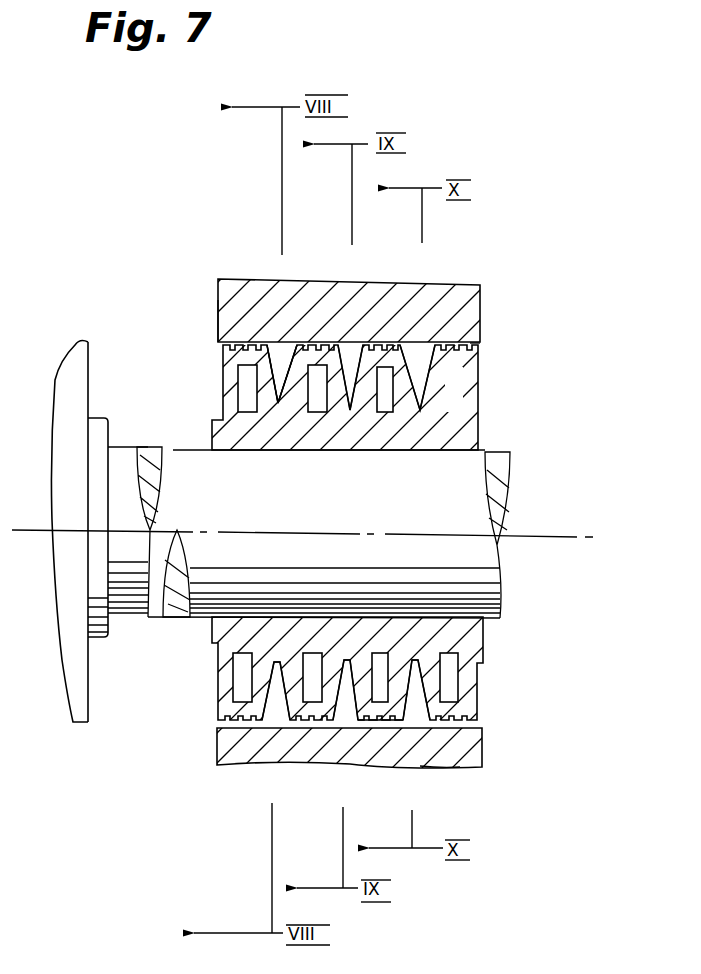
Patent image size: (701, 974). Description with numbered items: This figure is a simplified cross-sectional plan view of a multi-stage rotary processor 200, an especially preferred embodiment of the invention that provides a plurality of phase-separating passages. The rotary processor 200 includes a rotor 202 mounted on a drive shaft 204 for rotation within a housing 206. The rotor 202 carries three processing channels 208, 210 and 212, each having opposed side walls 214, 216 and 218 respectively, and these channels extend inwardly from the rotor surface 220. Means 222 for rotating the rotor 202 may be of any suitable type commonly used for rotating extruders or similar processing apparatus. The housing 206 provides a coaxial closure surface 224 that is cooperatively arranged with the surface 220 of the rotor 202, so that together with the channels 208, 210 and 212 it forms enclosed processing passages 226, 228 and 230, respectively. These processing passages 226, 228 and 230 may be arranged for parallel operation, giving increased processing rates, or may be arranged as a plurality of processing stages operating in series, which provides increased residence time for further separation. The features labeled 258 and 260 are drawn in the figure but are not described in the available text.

The rotary processor 200 is at (559, 247).
The rotor 202 is at (475, 388).
The drive shaft 204 is at (472, 496).
The housing 206 is at (463, 285).
The processing channel 208 is at (278, 405).
The processing channel 210 is at (350, 412).
The processing channel 212 is at (420, 412).
The opposed side walls 214 is at (220, 707).
The opposed side walls 216 is at (347, 700).
The opposed side walls 218 is at (413, 693).
The rotor surface 220 is at (222, 325).
The means for rotating rotor 222 is at (80, 378).
The coaxial closure surface 224 is at (278, 343).
The processing passage 226 is at (275, 716).
The processing passage 228 is at (357, 717).
The processing passage 230 is at (450, 767).
The slot 258 is at (470, 343).
The slot 260 is at (455, 663).